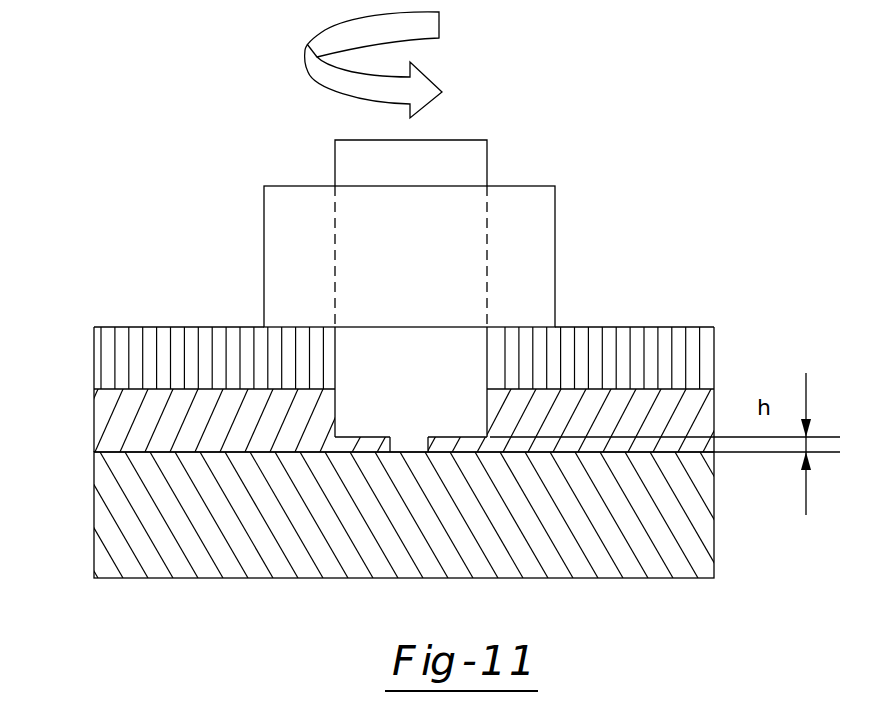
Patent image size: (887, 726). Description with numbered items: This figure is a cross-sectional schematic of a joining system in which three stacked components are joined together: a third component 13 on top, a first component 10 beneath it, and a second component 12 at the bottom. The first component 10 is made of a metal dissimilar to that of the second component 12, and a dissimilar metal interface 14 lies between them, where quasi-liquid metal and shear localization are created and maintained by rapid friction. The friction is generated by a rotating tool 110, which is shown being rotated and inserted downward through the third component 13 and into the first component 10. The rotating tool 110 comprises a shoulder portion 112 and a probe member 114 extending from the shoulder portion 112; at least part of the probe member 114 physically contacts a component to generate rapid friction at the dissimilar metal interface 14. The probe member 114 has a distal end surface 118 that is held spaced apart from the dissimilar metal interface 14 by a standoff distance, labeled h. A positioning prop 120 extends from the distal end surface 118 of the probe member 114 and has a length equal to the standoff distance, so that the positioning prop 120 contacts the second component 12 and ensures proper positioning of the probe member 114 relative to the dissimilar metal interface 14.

The rotating tool 110 is at (468, 224).
The shoulder portion 112 is at (555, 210).
The probe member 114 is at (488, 368).
The third component 13 is at (680, 327).
The first component 10 is at (93, 411).
The dissimilar metal interface 14 is at (93, 452).
The second component 12 is at (93, 547).
The distal end surface 118 is at (362, 437).
The positioning prop 120 is at (408, 452).